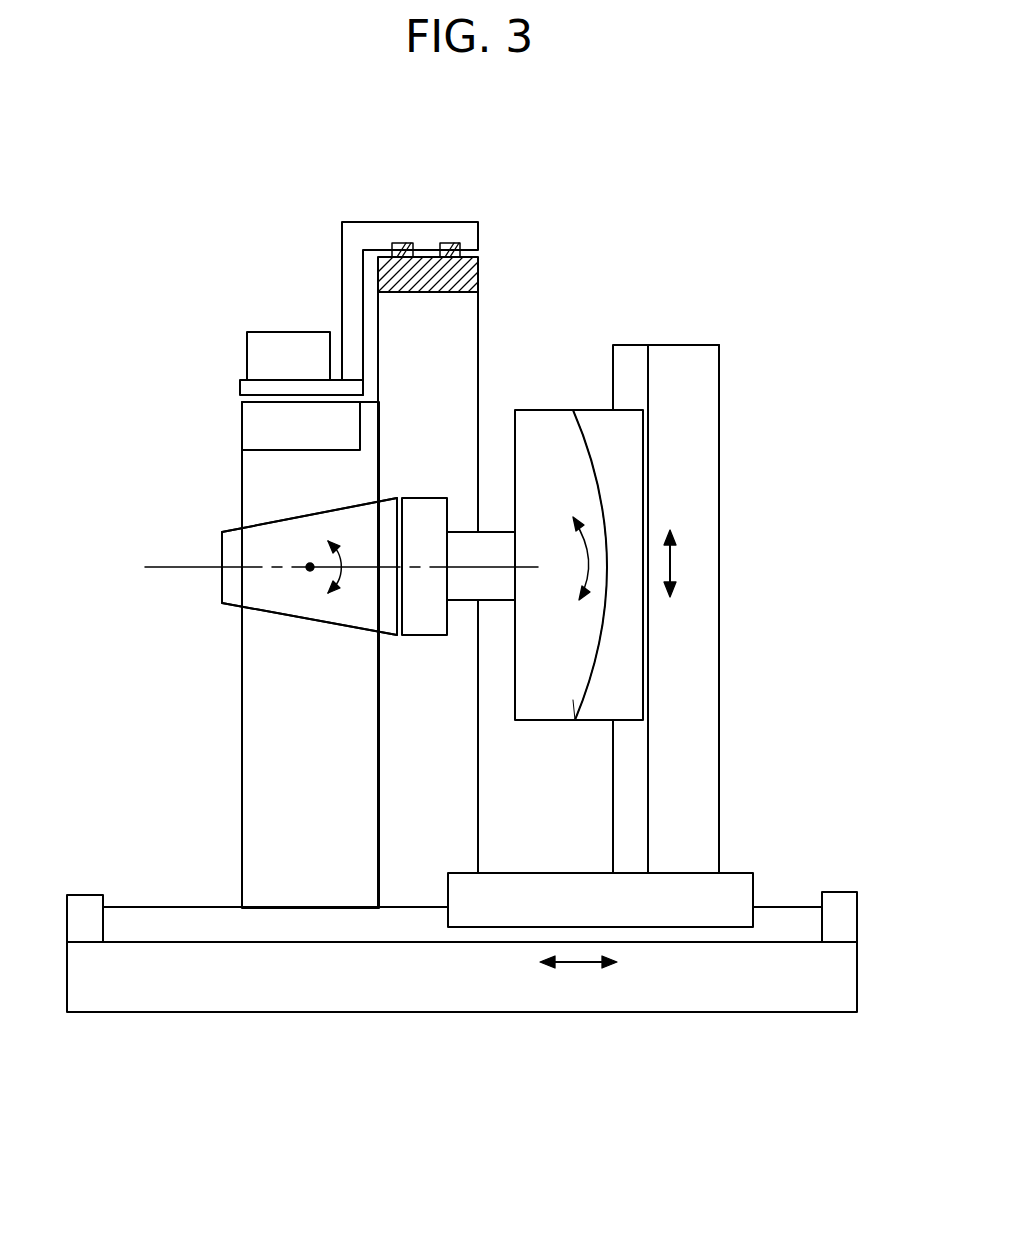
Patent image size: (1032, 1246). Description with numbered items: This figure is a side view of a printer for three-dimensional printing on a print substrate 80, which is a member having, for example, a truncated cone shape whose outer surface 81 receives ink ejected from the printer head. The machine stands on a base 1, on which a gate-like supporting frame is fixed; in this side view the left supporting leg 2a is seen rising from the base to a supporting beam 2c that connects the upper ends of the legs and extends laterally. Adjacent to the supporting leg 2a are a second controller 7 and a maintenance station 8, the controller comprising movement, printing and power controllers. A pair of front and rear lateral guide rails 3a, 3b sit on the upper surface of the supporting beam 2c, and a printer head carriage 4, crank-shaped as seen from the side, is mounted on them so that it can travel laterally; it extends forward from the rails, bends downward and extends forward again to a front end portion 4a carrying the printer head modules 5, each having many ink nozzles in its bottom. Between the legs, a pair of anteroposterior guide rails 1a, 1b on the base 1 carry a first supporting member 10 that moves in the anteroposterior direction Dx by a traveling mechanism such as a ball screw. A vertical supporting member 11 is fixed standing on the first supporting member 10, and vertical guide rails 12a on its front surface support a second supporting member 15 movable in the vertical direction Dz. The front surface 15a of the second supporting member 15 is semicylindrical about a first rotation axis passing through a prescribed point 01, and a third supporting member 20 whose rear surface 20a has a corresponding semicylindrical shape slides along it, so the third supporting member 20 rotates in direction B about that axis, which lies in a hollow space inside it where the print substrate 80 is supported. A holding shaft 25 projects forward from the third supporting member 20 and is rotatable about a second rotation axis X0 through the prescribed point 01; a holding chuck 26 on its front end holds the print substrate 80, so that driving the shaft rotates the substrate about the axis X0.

The base 1 is at (848, 975).
The anteroposterior guide rail 1a is at (785, 912).
The anteroposterior guide rail 1b is at (805, 917).
The first supporting member 10 is at (733, 885).
The vertical supporting member 11 is at (710, 365).
The vertical guide rail 12a is at (630, 345).
The second supporting member 15 is at (632, 447).
The front surface 15a is at (580, 690).
The third supporting member 20 is at (540, 418).
The rear surface 20a is at (600, 497).
The supporting leg 2a is at (455, 323).
The supporting beam 2c is at (462, 274).
The lateral guide rail 3a is at (403, 243).
The lateral guide rail 3b is at (449, 243).
The printer head carriage 4 is at (360, 232).
The front end portion 4a is at (240, 387).
The printer head module 5 is at (280, 340).
The second controller 7 is at (257, 483).
The maintenance station 8 is at (247, 426).
The holding shaft 25 is at (460, 612).
The holding chuck 26 is at (425, 620).
The print substrate 80 is at (232, 580).
The outer surface 81 is at (340, 612).
The prescribed point 01 is at (310, 572).
The second rotation axis X0 is at (170, 562).
The rotation direction B is at (342, 556).
The anteroposterior movement direction Dx is at (575, 965).
The vertical movement direction Dz is at (670, 565).